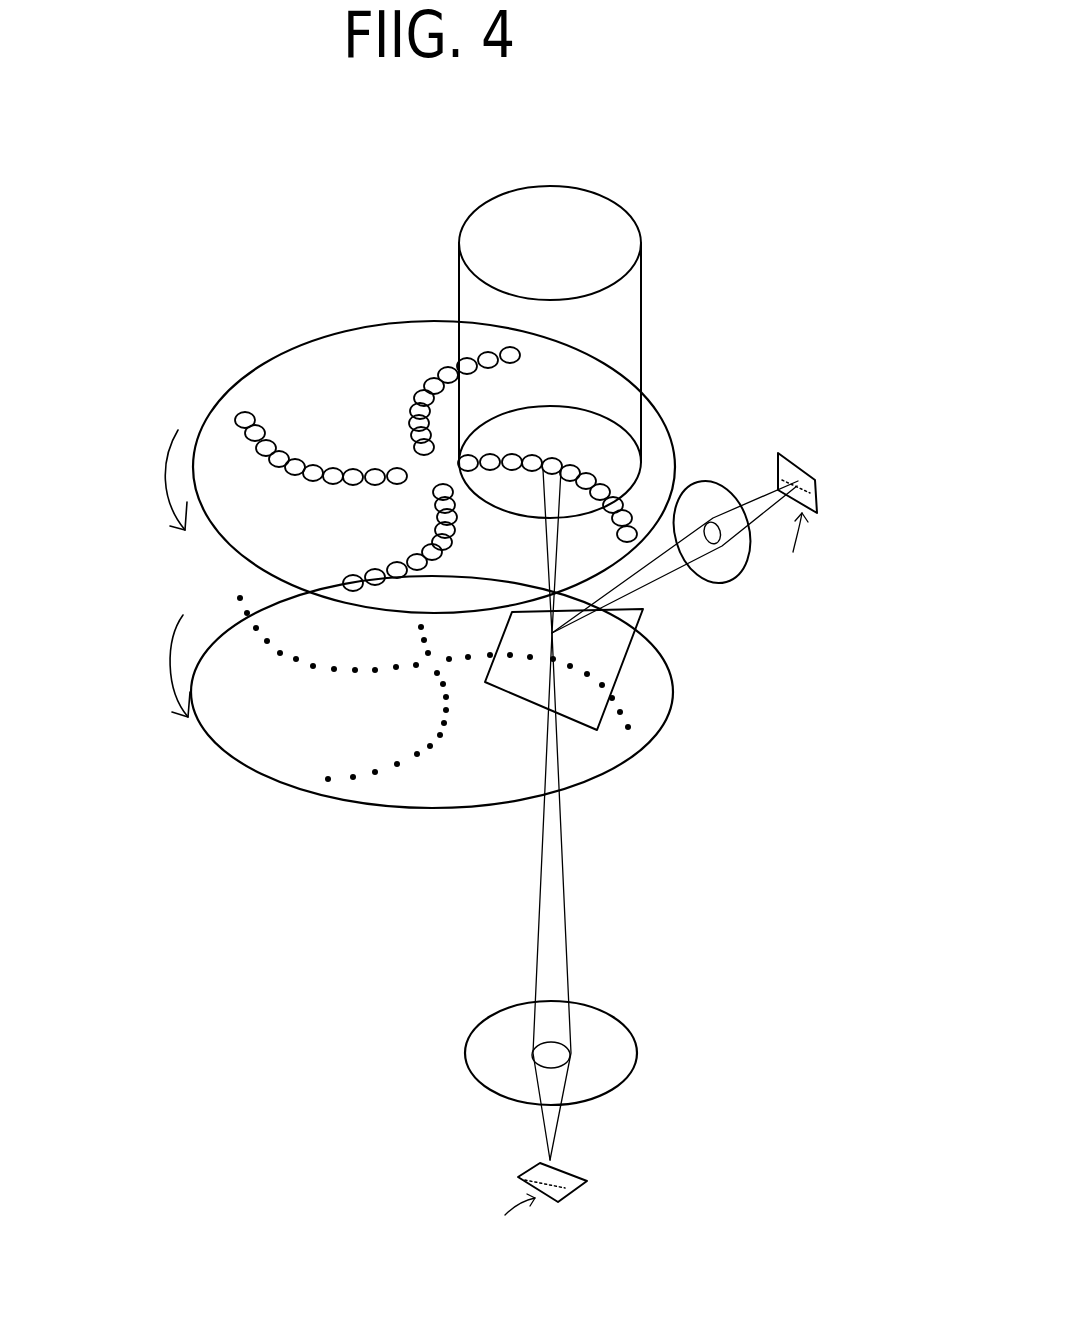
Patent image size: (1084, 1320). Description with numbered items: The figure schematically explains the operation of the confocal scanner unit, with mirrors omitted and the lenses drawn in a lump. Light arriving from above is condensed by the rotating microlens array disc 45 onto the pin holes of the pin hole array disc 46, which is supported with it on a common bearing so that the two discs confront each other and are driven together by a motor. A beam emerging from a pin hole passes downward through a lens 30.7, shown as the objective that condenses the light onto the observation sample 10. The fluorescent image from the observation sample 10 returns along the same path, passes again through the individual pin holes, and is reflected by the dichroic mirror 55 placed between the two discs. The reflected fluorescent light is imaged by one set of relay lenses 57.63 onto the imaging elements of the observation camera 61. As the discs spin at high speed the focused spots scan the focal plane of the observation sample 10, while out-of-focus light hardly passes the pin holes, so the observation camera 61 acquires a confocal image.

The microlens array disc 45 is at (293, 348).
The pin hole array disc 46 is at (230, 743).
The dichroic mirror 55 is at (624, 660).
The relay lenses 57.63 is at (743, 580).
The observation camera 61 is at (818, 483).
The objective lens 30.7 is at (630, 1030).
The observation sample 10 is at (583, 1172).